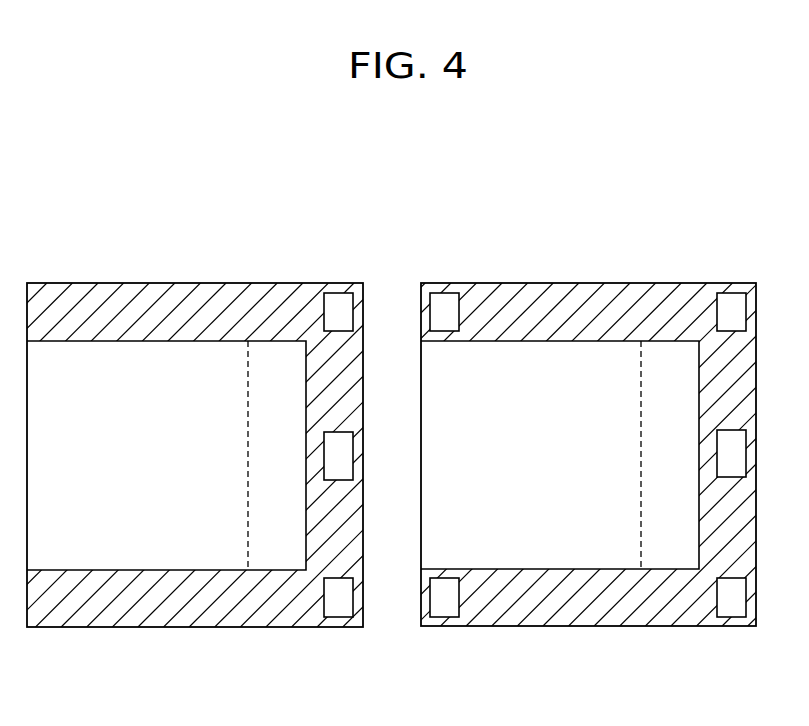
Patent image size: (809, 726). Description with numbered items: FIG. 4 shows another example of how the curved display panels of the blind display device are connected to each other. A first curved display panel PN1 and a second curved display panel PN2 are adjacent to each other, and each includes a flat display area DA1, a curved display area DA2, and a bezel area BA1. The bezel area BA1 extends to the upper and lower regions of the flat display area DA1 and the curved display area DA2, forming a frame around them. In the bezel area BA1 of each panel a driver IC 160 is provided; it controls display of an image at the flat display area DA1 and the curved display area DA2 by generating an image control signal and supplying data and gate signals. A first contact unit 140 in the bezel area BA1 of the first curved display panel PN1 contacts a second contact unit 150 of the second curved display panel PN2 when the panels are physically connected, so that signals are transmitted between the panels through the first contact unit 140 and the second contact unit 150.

The first contact unit 140 is at (338, 302).
The second contact unit 150 is at (444, 302).
The driver IC 160 is at (341, 468).
The first curved display panel PN1 is at (187, 252).
The second curved display panel PN2 is at (577, 252).
The bezel area BA1 is at (83, 293).
The flat display area DA1 is at (336, 456).
The curved display area DA2 is at (473, 456).